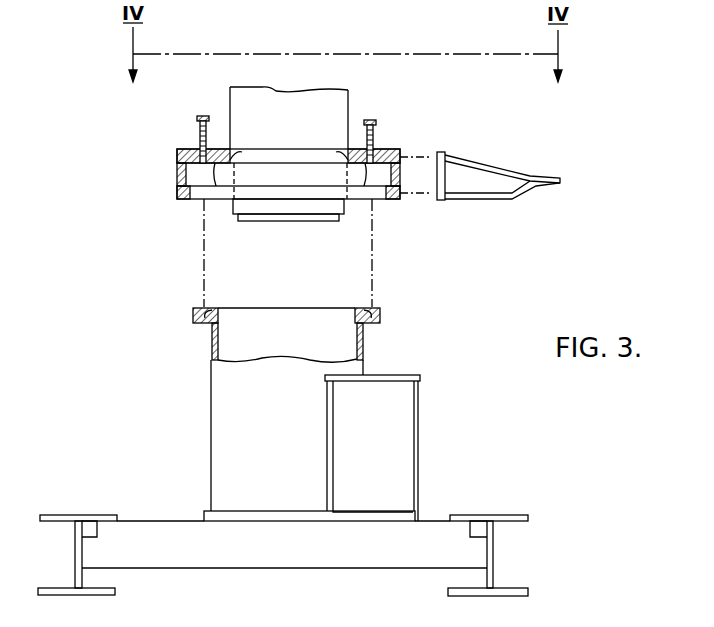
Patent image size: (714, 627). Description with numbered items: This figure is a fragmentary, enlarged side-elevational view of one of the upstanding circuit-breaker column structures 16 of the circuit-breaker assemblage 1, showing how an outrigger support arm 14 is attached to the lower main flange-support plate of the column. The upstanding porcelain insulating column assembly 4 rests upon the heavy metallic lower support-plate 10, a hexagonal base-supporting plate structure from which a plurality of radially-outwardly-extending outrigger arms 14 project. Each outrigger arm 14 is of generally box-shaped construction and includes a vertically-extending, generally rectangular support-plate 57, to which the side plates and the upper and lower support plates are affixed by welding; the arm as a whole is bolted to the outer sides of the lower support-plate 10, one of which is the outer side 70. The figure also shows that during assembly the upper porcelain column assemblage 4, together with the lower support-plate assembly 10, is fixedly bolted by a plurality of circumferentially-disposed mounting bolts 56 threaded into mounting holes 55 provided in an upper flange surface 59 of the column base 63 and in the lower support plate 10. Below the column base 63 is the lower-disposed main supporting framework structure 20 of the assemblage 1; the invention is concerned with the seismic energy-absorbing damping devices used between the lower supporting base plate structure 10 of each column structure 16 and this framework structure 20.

The circuit-breaker assemblage 1 is at (159, 255).
The upstanding porcelain insulating column assembly 4 is at (230, 102).
The upstanding circuit-breaker column structure 16 is at (348, 104).
The lower support-plate 10 is at (180, 152).
The bolts 56 is at (200, 127).
The mounting holes 55 is at (234, 158).
The outer side of the lower support-plate 70 is at (400, 164).
The outrigger support arm 14 is at (488, 166).
The vertically-extending support-plate 57 is at (437, 180).
The upper flange surface 59 is at (382, 317).
The column base 63 is at (211, 412).
The main supporting framework structure 20 is at (436, 522).